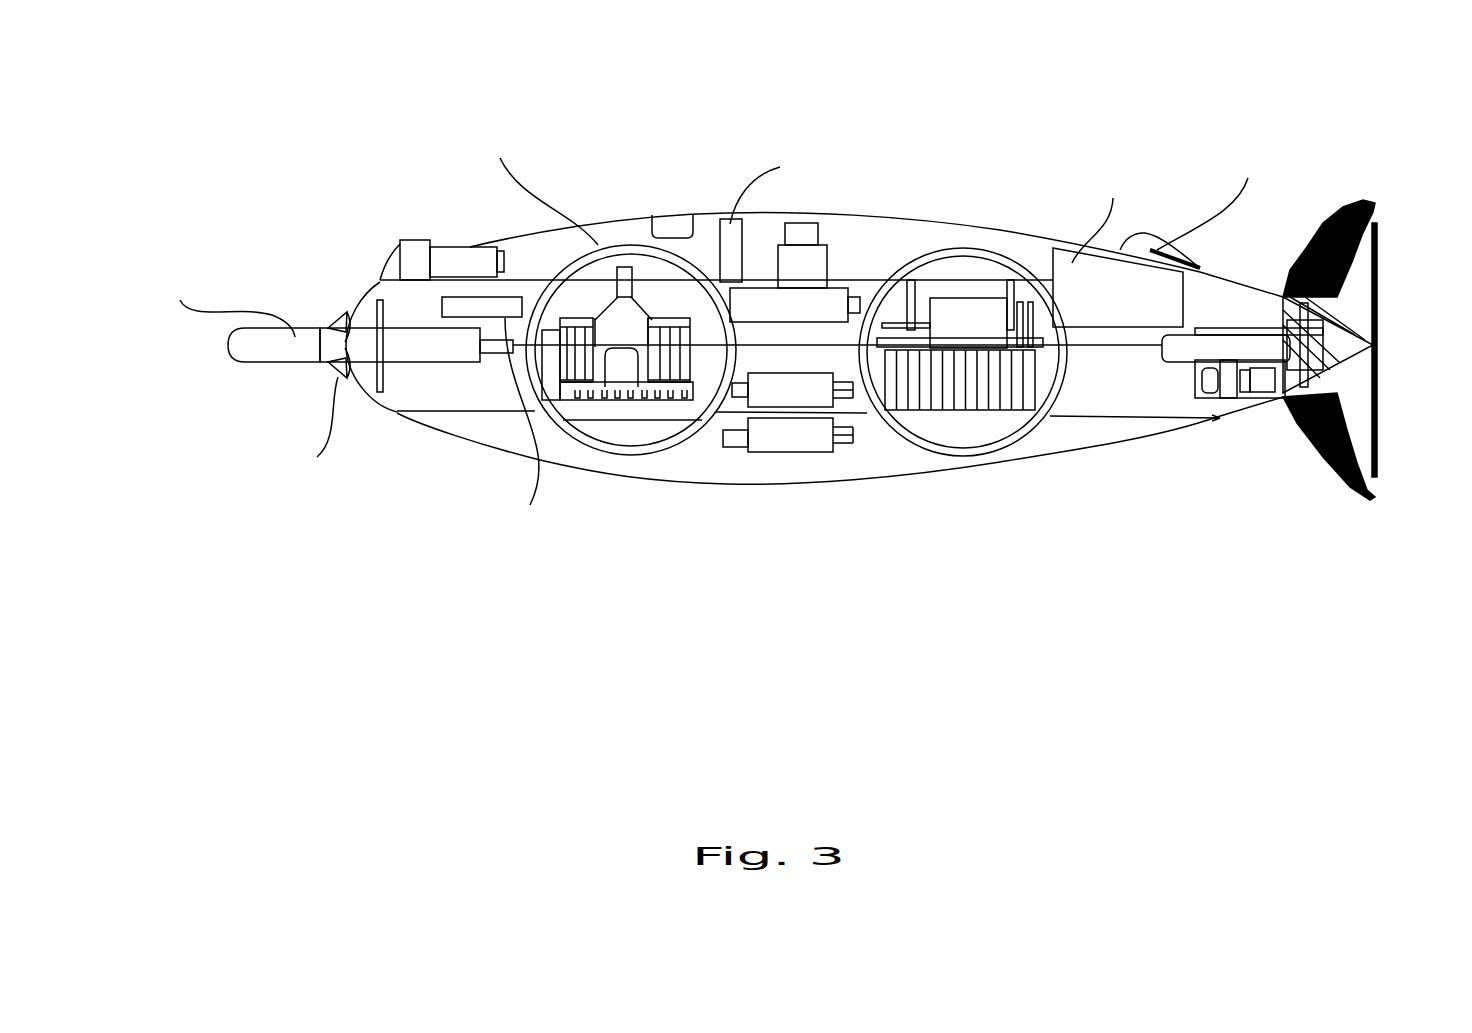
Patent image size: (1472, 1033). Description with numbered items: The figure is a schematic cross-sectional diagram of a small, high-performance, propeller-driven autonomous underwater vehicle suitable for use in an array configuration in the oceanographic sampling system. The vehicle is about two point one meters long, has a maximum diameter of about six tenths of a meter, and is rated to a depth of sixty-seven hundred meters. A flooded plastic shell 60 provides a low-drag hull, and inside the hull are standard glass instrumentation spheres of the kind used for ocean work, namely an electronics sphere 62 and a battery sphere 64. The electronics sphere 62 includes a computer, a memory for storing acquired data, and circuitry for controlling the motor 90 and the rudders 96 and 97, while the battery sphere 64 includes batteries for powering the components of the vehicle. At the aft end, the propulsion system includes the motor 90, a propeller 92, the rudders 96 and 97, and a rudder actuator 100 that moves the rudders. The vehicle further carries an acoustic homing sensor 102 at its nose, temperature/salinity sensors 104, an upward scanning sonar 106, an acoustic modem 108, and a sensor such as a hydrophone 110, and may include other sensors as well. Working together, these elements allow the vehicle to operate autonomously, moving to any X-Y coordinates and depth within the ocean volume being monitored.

The flooded plastic shell 60 is at (897, 482).
The electronics sphere 62 is at (662, 683).
The battery sphere 64 is at (1120, 695).
The motor 90 is at (1187, 357).
The propeller 92 is at (1380, 298).
The rudder 96 is at (1332, 221).
The rudder 97 is at (1357, 500).
The rudder actuator 100 is at (1358, 578).
The acoustic homing sensor 102 is at (285, 352).
The temperature/salinity sensors 104 is at (845, 582).
The upward scanning sonar 106 is at (457, 250).
The acoustic modem 108 is at (822, 232).
The hydrophone 110 is at (673, 224).